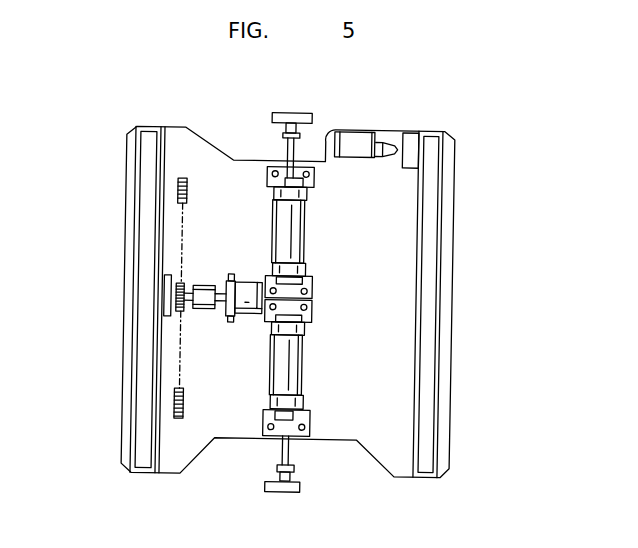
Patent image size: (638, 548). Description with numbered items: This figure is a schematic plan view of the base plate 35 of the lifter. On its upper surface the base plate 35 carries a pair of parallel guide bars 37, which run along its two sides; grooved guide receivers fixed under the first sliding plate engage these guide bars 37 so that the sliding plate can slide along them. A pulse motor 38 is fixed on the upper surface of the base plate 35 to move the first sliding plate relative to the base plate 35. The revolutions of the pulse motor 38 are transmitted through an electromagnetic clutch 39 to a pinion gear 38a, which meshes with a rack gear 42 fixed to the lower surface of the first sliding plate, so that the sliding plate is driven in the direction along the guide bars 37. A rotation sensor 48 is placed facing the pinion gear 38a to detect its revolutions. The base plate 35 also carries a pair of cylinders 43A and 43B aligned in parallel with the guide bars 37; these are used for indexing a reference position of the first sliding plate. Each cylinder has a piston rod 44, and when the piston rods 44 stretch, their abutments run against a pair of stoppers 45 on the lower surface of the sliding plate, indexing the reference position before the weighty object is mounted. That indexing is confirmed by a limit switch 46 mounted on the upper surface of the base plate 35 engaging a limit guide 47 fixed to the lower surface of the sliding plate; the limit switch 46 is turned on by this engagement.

The base plate 35 is at (177, 135).
The guide bars 37 is at (143, 212).
The pulse motor 38 is at (243, 318).
The pinion gear 38a is at (184, 309).
The electromagnetic clutch 39 is at (207, 286).
The rack gear 42 is at (181, 378).
The cylinder 43A is at (302, 233).
The cylinder 43B is at (303, 378).
The piston rod 44 is at (288, 150).
The stopper 45 is at (277, 118).
The limit switch 46 is at (358, 157).
The limit guide 47 is at (400, 155).
The rotation sensor 48 is at (164, 298).